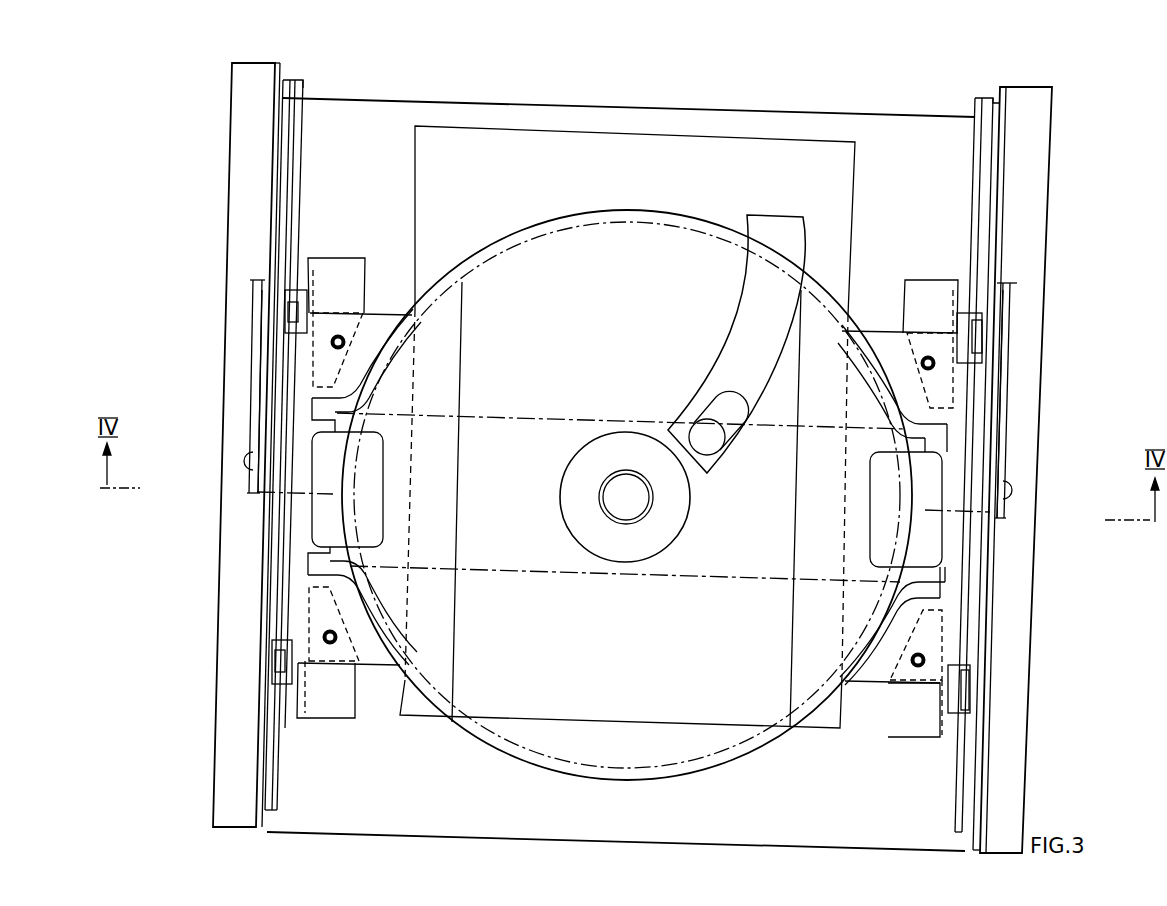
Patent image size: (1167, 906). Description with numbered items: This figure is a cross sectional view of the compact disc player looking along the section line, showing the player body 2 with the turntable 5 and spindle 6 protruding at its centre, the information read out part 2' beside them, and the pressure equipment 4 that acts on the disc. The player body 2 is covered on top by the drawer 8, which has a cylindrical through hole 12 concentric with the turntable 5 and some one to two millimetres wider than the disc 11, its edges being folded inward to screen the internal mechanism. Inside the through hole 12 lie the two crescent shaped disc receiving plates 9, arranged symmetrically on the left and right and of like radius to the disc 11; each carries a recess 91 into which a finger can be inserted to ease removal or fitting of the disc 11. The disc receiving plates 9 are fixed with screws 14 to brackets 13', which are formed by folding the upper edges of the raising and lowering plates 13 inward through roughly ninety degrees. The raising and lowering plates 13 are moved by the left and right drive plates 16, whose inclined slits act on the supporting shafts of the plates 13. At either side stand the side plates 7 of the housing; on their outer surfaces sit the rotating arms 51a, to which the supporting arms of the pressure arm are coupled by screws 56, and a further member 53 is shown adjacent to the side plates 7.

The player body 2 is at (627, 406).
The information read out part 2' is at (725, 344).
The pressure equipment 4 is at (535, 415).
The turntable 5 is at (578, 484).
The spindle 6 is at (637, 515).
The side plate 7 is at (268, 215).
The drawer 8 is at (437, 98).
The disc receiving plate 9 is at (462, 365).
The disc 11 is at (683, 211).
The through hole 12 is at (505, 232).
The raising and lowering plate 13 is at (629, 497).
The bracket 13' is at (627, 496).
The screw 14 is at (342, 336).
The drive plate 16 is at (297, 520).
The rotating arm 51a is at (258, 366).
The rod 53 is at (283, 432).
The screw 56 is at (245, 462).
The recess 91 is at (373, 487).